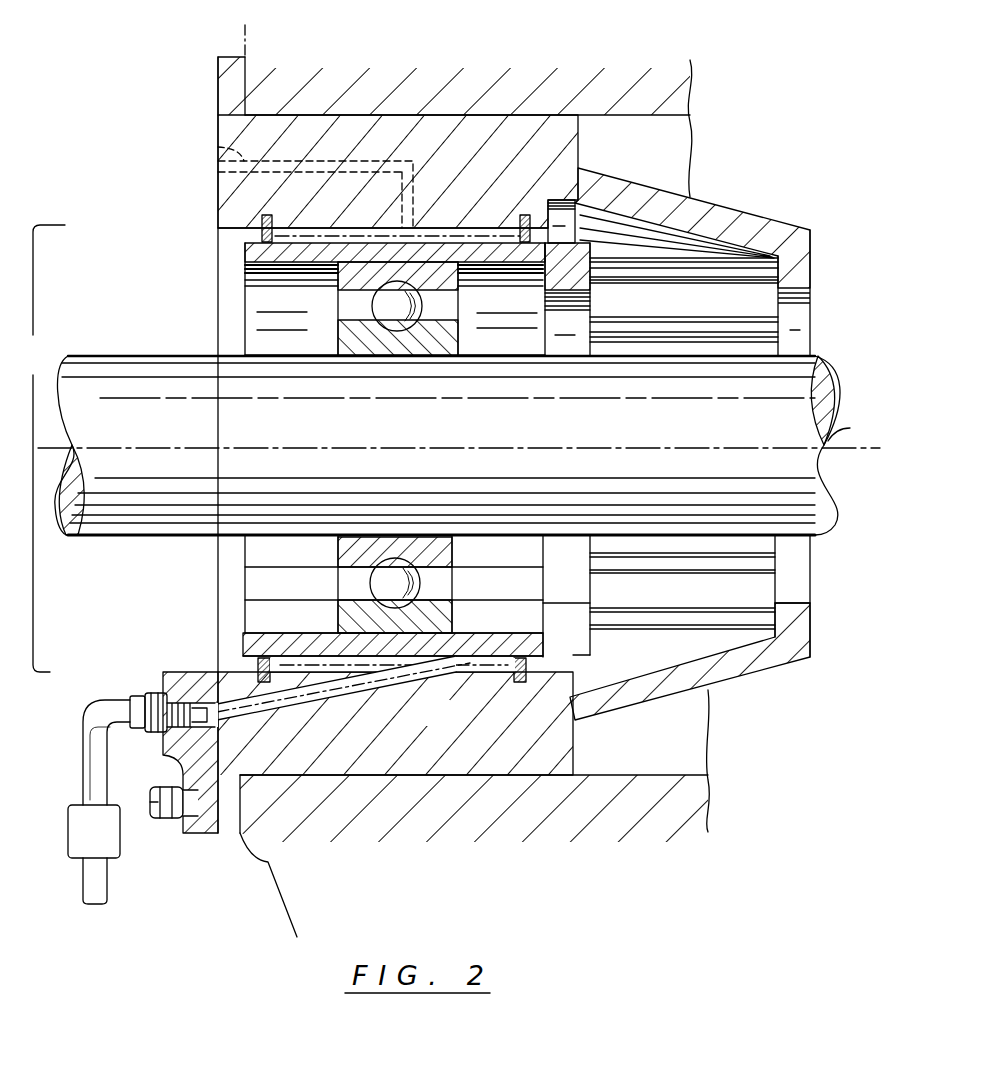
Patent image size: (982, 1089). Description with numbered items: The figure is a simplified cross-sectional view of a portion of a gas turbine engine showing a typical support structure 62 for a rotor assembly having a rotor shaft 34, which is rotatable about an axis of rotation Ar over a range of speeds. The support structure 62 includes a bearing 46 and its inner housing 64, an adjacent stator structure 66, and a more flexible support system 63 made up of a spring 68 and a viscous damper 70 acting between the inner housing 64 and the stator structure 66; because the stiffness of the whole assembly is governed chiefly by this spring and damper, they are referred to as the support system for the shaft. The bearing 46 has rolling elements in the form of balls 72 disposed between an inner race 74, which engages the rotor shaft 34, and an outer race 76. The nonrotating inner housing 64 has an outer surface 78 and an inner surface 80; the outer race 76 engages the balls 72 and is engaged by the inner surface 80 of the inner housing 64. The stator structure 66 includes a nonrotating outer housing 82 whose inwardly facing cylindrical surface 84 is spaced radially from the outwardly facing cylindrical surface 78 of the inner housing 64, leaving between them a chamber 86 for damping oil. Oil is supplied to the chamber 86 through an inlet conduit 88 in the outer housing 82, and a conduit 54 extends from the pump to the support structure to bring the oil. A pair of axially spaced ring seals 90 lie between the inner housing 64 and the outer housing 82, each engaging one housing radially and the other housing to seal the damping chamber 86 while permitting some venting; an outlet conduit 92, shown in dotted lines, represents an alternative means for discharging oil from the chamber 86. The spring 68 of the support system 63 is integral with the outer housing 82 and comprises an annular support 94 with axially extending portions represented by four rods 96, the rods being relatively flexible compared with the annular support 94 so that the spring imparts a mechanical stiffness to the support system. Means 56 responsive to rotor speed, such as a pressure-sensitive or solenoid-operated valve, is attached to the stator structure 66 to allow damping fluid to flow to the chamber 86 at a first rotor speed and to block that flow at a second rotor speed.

The rotor shaft 34 is at (128, 355).
The bearing 46 is at (335, 560).
The conduit 54 is at (85, 749).
The means responsive to the rotor speed 56 is at (108, 842).
The support structure 62 is at (190, 72).
The support system 63 is at (37, 448).
The inner housing 64 is at (245, 252).
The stator structure 66 is at (262, 870).
The spring 68 is at (812, 661).
The damper 70 is at (252, 231).
The balls 72 is at (408, 594).
The inner race 74 is at (452, 550).
The outer race 76 is at (446, 613).
The outer surface 78 is at (330, 653).
The inner surface 80 is at (270, 633).
The outer housing 82 is at (442, 724).
The cylindrical surface 84 is at (470, 669).
The chamber 86 is at (470, 228).
The inlet conduit 88 is at (270, 719).
The ring seals 90 is at (258, 662).
The outlet conduit 92 is at (218, 146).
The annular support 94 is at (705, 201).
The rods 96 is at (657, 632).